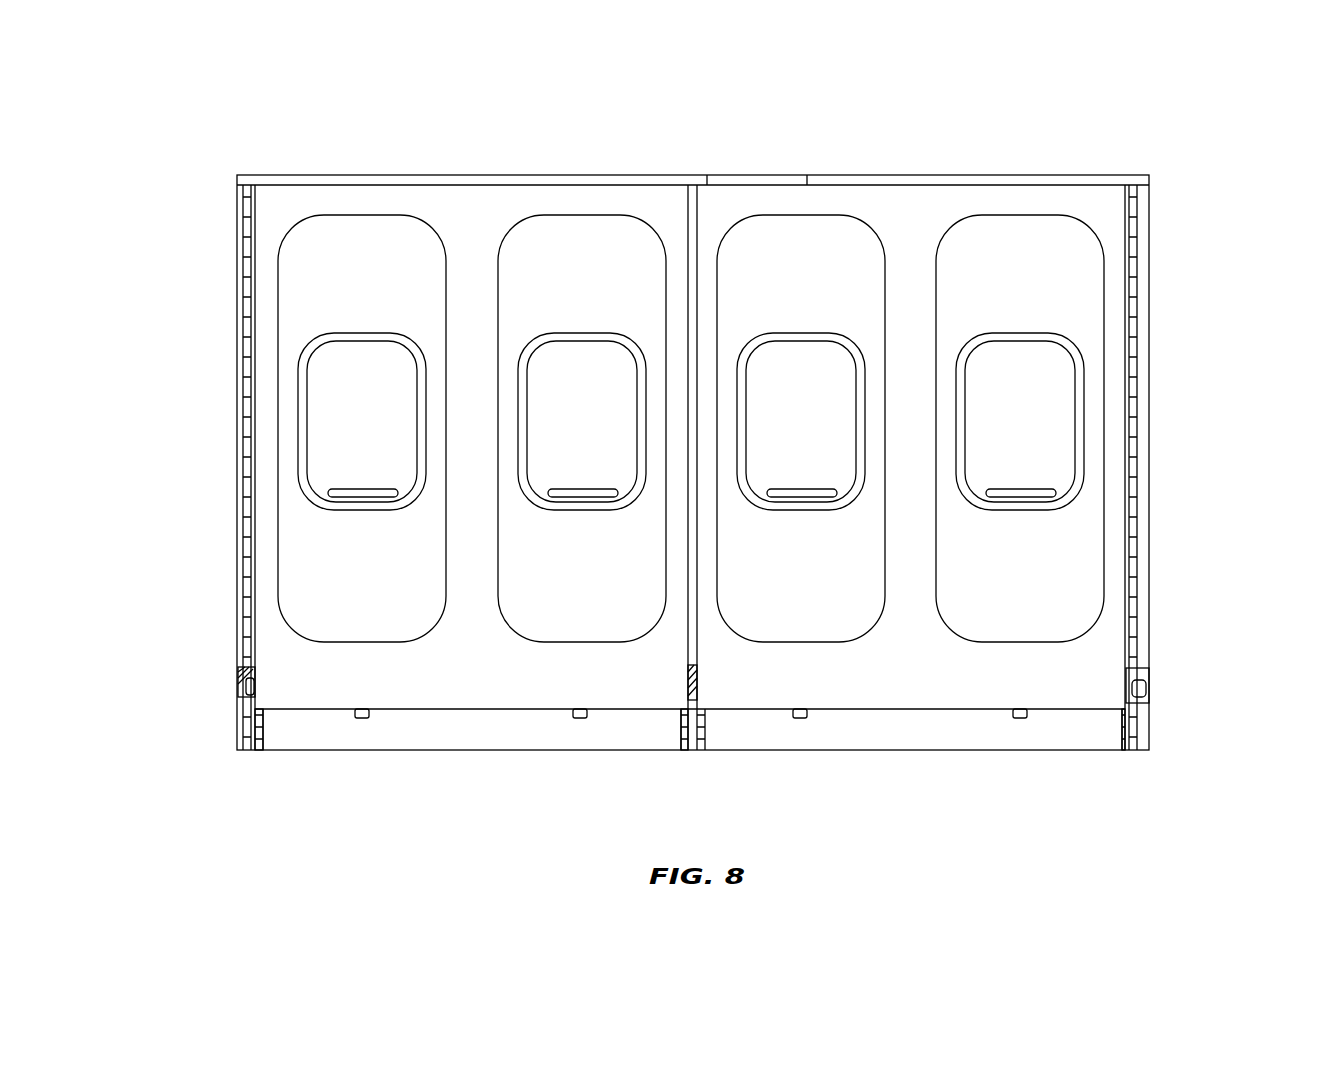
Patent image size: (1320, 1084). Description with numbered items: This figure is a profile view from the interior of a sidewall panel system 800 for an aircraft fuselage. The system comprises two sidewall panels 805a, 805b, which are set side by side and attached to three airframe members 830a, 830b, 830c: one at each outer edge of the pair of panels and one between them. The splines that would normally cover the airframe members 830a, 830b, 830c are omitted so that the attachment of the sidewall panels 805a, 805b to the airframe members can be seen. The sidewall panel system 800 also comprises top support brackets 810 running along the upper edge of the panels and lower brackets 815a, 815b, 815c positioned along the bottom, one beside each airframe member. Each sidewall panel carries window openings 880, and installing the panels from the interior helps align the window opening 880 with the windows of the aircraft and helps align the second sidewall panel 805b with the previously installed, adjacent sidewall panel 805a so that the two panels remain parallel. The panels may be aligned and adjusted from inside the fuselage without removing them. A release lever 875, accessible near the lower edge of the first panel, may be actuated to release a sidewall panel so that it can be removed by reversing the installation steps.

The sidewall panel system 800 is at (1175, 207).
The top support brackets 810 is at (250, 208).
The release lever 875 is at (294, 716).
The sidewall panel 805a is at (484, 688).
The sidewall panel 805b is at (991, 519).
The window opening 880 is at (1078, 390).
The lower bracket 815a is at (242, 676).
The lower bracket 815b is at (697, 713).
The lower bracket 815c is at (1150, 678).
The airframe member 830a is at (250, 728).
The airframe member 830b is at (689, 712).
The airframe member 830c is at (1124, 728).